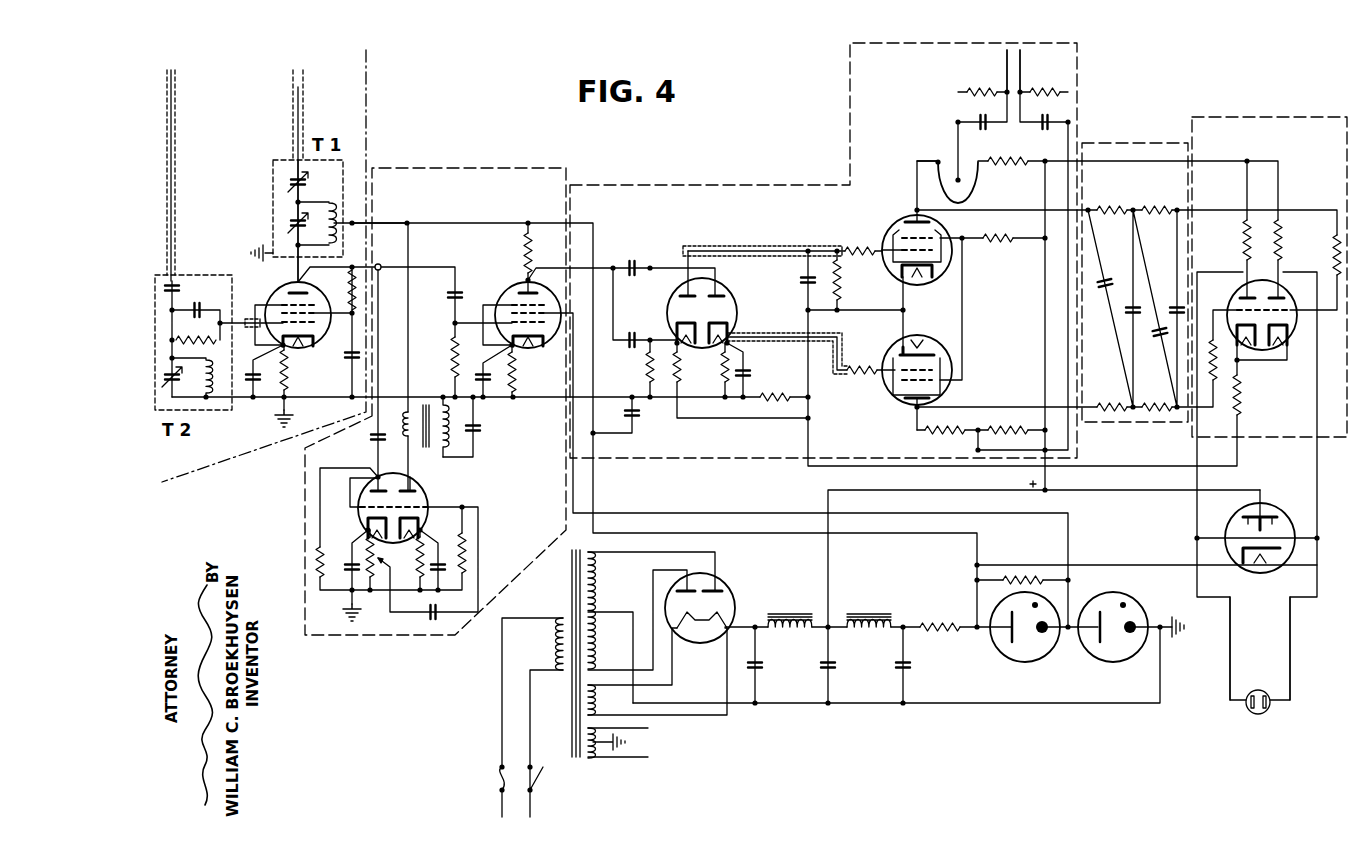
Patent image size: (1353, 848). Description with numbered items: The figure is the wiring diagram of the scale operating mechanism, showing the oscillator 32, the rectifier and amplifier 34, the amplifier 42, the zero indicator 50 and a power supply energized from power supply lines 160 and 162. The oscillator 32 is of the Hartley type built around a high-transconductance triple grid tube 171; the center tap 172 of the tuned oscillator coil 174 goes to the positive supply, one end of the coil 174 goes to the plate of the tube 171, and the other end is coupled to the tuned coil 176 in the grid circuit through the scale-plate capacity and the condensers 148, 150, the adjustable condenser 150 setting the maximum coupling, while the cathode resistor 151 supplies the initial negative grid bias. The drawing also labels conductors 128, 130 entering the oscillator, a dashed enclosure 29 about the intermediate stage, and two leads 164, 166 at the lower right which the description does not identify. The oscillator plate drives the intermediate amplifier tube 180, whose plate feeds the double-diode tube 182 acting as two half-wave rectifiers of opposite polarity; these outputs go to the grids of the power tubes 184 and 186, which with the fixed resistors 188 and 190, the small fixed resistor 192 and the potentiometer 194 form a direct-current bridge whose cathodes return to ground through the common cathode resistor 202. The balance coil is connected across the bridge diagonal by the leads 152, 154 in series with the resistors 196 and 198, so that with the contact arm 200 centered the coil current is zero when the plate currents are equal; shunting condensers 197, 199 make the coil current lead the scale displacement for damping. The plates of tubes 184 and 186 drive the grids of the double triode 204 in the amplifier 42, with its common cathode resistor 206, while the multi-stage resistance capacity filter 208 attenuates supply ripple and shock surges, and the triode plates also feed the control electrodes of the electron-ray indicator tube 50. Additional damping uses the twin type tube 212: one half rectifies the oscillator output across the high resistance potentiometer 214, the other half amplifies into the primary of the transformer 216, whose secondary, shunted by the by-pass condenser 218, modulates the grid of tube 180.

The antenna input lead 128 is at (173, 150).
The antenna input lead 130 is at (297, 88).
The adjustable condenser 150 is at (288, 178).
The center tap 172 is at (337, 223).
The tuned oscillator coil 174 is at (353, 223).
The oscillator 32 is at (367, 113).
The amplifier section 29 is at (513, 150).
The condenser 148 is at (177, 275).
The tuned coil 176 is at (218, 382).
The cathode resistor 151 is at (287, 367).
The triple grid tube 171 is at (320, 347).
The intermediate amplifier tube 180 is at (513, 283).
The R. F. by-pass condenser 218 is at (483, 430).
The transformer 216 is at (430, 453).
The twin type tube 212 is at (428, 495).
The high resistance potentiometer 214 is at (388, 568).
The rectifier and amplifier 34 is at (716, 183).
The double-diode tube 182 is at (737, 306).
The common cathode resistor 202 is at (773, 400).
The power tube 184 is at (952, 275).
The power tube 186 is at (952, 358).
The fixed resistor 190 is at (1022, 427).
The small fixed resistor 192 is at (940, 437).
The fixed resistor 188 is at (1007, 163).
The potentiometer 194 is at (935, 163).
The contact arm 200 is at (950, 182).
The resistor 196 is at (967, 86).
The condenser 197 is at (975, 128).
The lead 152 is at (1003, 72).
The lead 154 is at (1022, 55).
The resistor 198 is at (1072, 92).
The condenser 199 is at (1072, 125).
The multi-stage resistance capacity filter 208 is at (1148, 142).
The amplifier 42 is at (1272, 116).
The double triode 204 is at (1290, 347).
The common cathode resistor 206 is at (1245, 405).
The electron-ray indicator tube 50 is at (1295, 523).
The output lead 164 is at (1227, 640).
The output lead 166 is at (1293, 637).
The power supply line 160 is at (533, 807).
The power supply line 162 is at (500, 802).